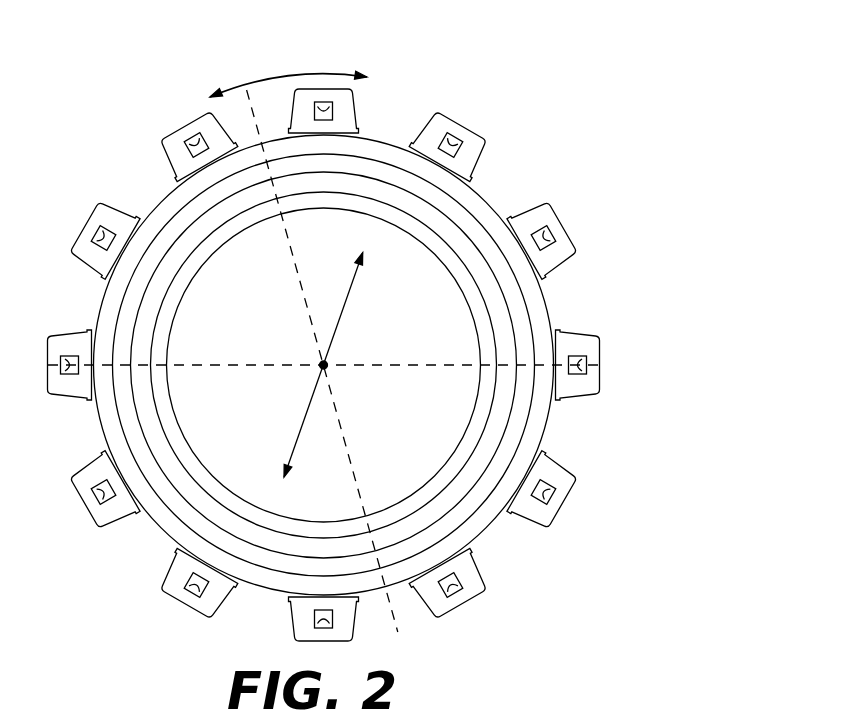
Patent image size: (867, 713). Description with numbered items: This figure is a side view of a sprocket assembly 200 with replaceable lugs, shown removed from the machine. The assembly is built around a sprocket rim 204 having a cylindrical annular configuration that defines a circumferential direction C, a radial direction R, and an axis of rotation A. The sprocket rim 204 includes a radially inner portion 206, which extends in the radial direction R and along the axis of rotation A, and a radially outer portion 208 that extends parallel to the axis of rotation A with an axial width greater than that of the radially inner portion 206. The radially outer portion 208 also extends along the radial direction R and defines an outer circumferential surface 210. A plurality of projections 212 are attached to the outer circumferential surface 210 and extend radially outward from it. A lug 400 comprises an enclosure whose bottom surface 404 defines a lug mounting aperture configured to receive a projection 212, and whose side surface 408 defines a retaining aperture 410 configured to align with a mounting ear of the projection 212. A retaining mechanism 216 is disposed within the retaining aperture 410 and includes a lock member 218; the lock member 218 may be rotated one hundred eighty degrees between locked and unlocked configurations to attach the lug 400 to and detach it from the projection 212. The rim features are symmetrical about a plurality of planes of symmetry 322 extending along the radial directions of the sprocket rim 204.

The sprocket assembly 200 is at (513, 107).
The sprocket rim 204 is at (552, 418).
The radially inner portion 206 is at (205, 253).
The radially outer portion 208 is at (538, 316).
The outer circumferential surface 210 is at (380, 143).
The projection 212 is at (467, 180).
The retaining mechanism 216 is at (548, 502).
The lock member 218 is at (548, 485).
The plane of symmetry 322 is at (298, 273).
The lug 400 is at (545, 225).
The bottom surface 404 is at (510, 217).
The side surface 408 is at (558, 245).
The retaining aperture 410 is at (543, 223).
The radial direction R is at (340, 310).
The axis of rotation A is at (328, 368).
The circumferential direction C is at (282, 75).